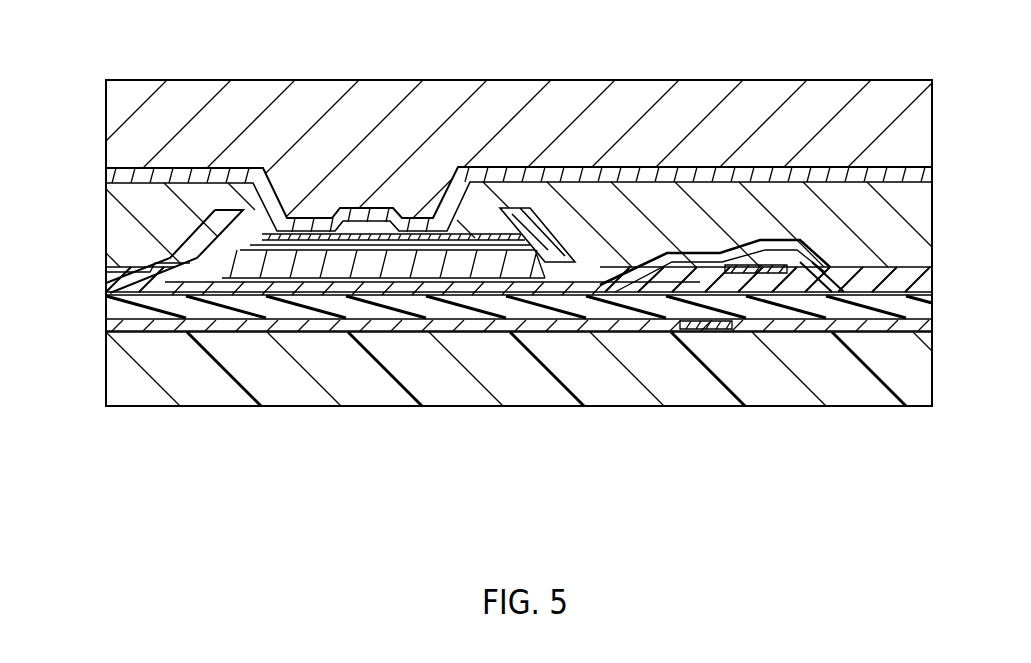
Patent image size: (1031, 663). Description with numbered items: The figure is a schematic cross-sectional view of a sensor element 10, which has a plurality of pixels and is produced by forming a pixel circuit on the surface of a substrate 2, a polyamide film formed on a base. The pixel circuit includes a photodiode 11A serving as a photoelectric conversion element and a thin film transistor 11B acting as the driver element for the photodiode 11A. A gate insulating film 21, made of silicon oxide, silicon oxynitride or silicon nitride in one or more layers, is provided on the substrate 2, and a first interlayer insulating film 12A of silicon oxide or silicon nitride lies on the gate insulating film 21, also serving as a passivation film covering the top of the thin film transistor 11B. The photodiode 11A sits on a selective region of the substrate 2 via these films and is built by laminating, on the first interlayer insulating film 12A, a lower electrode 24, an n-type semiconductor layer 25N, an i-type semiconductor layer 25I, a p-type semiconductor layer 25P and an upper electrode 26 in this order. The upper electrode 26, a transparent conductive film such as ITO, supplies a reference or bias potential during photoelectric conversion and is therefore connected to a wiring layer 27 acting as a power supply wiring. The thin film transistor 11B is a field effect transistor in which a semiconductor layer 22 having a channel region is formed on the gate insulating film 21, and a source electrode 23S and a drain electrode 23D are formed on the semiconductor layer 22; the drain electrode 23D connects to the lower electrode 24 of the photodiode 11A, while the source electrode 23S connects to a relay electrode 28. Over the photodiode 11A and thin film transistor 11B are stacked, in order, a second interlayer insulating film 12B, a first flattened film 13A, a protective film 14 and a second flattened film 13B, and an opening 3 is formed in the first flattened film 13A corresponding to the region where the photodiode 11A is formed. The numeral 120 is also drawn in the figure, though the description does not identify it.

The substrate 2 is at (903, 363).
The opening 3 is at (403, 235).
The sensor element 10 is at (92, 82).
The photodiode 11A is at (542, 467).
The thin film transistor 11B is at (900, 467).
The first interlayer insulating film 12A is at (903, 307).
The second interlayer insulating film 12B is at (903, 280).
The first flattened film 13A is at (903, 230).
The second flattened film 13B is at (902, 120).
The protective film 14 is at (903, 173).
The gate insulating film 21 is at (872, 325).
The semiconductor layer 22 is at (657, 295).
The drain electrode 23D is at (612, 290).
The source electrode 23S is at (806, 292).
The lower electrode 24 is at (191, 292).
The i-type semiconductor layer 25I is at (452, 262).
The n-type semiconductor layer 25N is at (400, 270).
The p-type semiconductor layer 25P is at (488, 245).
The upper electrode 26 is at (283, 285).
The wiring layer 27 is at (355, 285).
The relay electrode 28 is at (750, 255).
The conductive pattern 120 is at (712, 330).